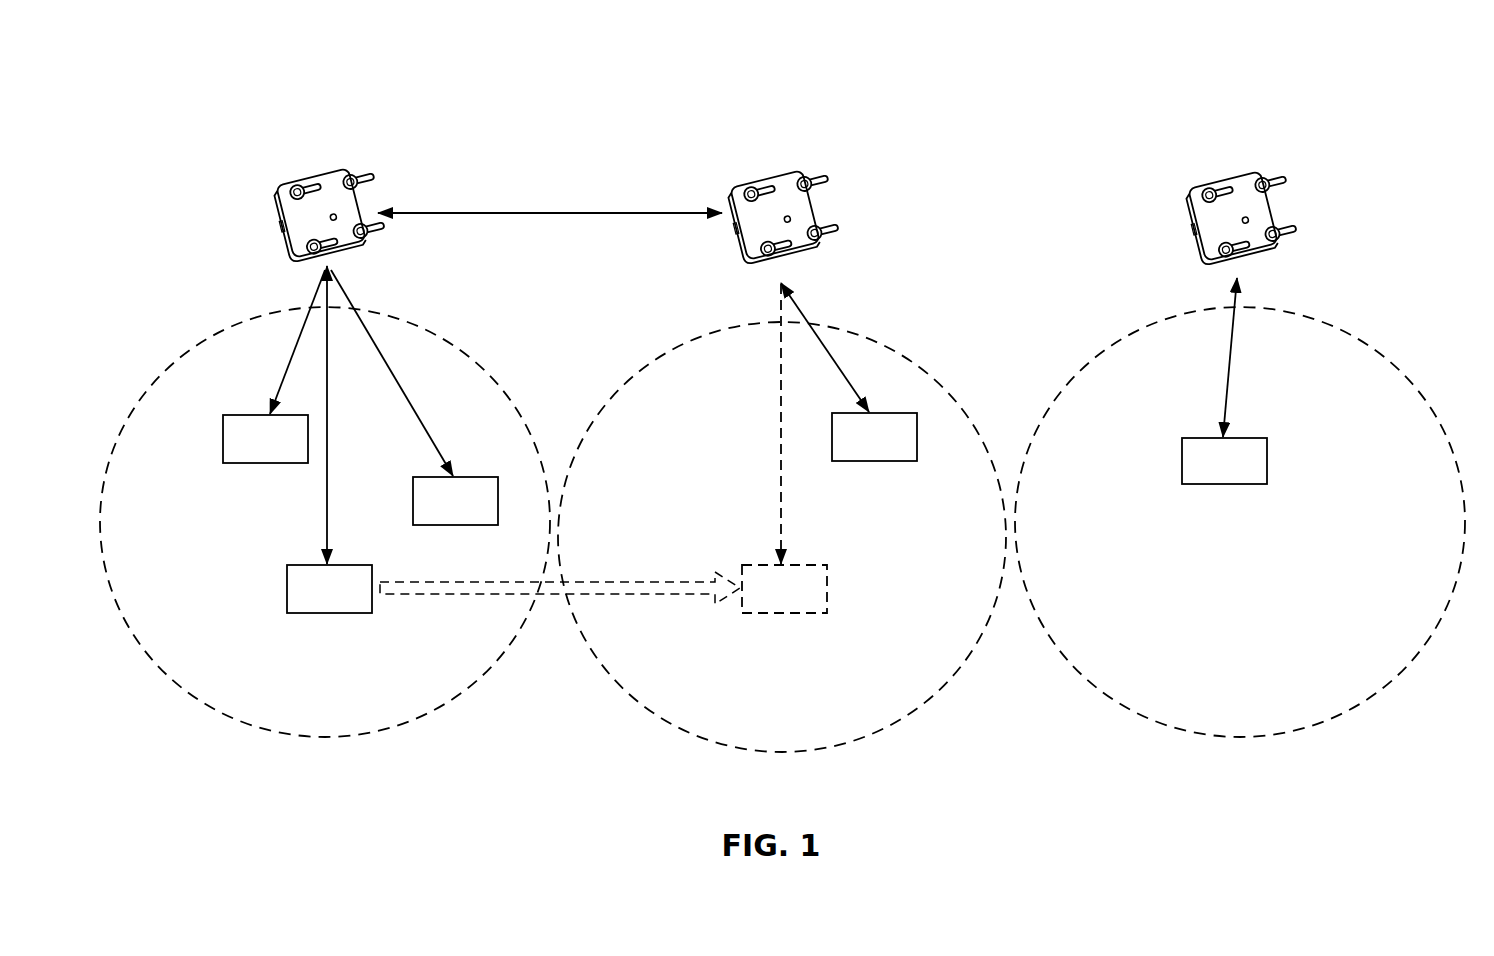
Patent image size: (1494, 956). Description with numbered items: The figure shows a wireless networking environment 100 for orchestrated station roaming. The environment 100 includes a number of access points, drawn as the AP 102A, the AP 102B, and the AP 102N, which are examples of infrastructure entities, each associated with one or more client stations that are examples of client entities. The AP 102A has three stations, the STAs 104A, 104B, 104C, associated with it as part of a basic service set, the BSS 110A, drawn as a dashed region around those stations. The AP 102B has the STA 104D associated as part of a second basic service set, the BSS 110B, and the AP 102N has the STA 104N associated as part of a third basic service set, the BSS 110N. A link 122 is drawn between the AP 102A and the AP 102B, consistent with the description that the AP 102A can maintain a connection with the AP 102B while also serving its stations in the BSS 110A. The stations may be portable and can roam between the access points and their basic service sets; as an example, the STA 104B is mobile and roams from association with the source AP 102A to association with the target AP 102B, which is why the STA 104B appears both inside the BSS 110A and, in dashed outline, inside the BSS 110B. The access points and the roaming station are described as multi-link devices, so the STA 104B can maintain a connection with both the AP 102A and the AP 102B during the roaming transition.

The wireless networking environment 100 is at (215, 74).
The AP 102A is at (357, 153).
The AP 102B is at (811, 153).
The AP 102N is at (1270, 153).
The STA 104A is at (296, 454).
The STA 104B is at (360, 604).
The STA 104C is at (486, 516).
The STA 104D is at (844, 452).
The STA 104N is at (1194, 476).
The basic service set (BSS) 110A is at (296, 703).
The basic service set (BSS) 110B is at (755, 703).
The basic service set (BSS) 110N is at (1217, 703).
The backhaul link between access points 122 is at (528, 204).